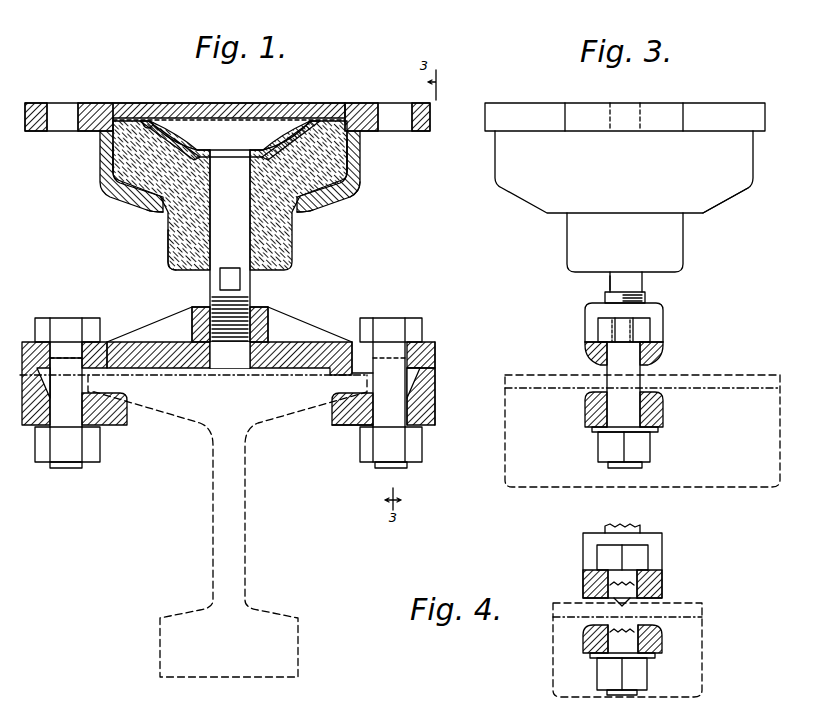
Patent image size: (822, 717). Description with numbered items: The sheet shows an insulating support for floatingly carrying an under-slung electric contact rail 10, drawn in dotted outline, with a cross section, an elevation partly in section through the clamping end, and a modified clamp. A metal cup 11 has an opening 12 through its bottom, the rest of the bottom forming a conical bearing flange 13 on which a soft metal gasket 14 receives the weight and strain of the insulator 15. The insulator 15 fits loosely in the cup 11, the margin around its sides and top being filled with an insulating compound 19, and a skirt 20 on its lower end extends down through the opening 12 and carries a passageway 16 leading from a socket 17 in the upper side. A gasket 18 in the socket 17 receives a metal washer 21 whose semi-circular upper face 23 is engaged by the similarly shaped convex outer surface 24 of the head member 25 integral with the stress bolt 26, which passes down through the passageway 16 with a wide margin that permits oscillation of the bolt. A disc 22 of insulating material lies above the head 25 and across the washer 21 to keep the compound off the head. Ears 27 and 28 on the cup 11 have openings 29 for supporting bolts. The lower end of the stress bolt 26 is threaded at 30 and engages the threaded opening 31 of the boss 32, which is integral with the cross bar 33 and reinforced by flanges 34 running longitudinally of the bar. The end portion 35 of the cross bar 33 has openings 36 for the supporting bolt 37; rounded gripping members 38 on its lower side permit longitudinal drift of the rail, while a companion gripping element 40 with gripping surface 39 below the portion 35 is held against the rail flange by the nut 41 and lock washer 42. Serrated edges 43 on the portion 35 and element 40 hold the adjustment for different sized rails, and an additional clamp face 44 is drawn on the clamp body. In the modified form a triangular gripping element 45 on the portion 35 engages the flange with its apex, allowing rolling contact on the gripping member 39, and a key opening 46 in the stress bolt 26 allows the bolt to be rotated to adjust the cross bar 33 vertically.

In FIG. 1, the contact rail 10 is at (165, 636).
In FIG. 3, the contact rail 10 is at (516, 447).
In FIG. 1, the metal cup 11 is at (108, 156).
In FIG. 3, the metal cup 11 is at (506, 164).
In FIG. 1, the opening 12 is at (160, 214).
In FIG. 1, the conical bearing flange 13 is at (330, 200).
In FIG. 1, the gasket 14 is at (350, 192).
In FIG. 1, the insulator 15 is at (345, 160).
In FIG. 1, the opening 16 is at (190, 240).
In FIG. 1, the socket 17 is at (120, 163).
In FIG. 1, the gasket 18 is at (149, 122).
In FIG. 1, the insulating compound 19 is at (125, 114).
In FIG. 1, the skirt 20 is at (175, 231).
In FIG. 3, the skirt 20 is at (577, 243).
In FIG. 1, the metal washer 21 is at (177, 118).
In FIG. 1, the disc 22 is at (183, 110).
In FIG. 1, the semi-circular upper face 23 is at (205, 120).
In FIG. 1, the convex outer surface 24 is at (278, 124).
In FIG. 1, the head member 25 is at (240, 130).
In FIG. 1, the stress bolt 26 is at (208, 273).
In FIG. 3, the stress bolt 26 is at (634, 284).
In FIG. 1, the ear 27 is at (357, 114).
In FIG. 1, the ear 28 is at (89, 110).
In FIG. 3, the ear 28 is at (670, 108).
In FIG. 1, the opening 29 is at (55, 112).
In FIG. 3, the opening 29 is at (643, 106).
In FIG. 1, the threaded portion 30 is at (258, 313).
In FIG. 1, the threaded opening 31 is at (264, 322).
In FIG. 1, the boss 32 is at (262, 328).
In FIG. 1, the cross bar 33 is at (298, 352).
In FIG. 1, the flanges 34 is at (315, 320).
In FIG. 1, the end portion 35 is at (430, 340).
In FIG. 3, the end portion 35 is at (586, 344).
In FIG. 4, the end portion 35 is at (583, 581).
In FIG. 1, the opening 36 is at (36, 340).
In FIG. 3, the opening 36 is at (585, 355).
In FIG. 1, the supporting bolt 37 is at (66, 336).
In FIG. 3, the supporting bolt 37 is at (640, 352).
In FIG. 4, the supporting bolt 37 is at (662, 580).
In FIG. 1, the gripping members 38 is at (340, 378).
In FIG. 3, the gripping members 38 is at (650, 366).
In FIG. 1, the gripping surface 39 is at (330, 398).
In FIG. 3, the gripping surface 39 is at (652, 393).
In FIG. 4, the gripping surface 39 is at (606, 626).
In FIG. 1, the companion gripping element 40 is at (350, 426).
In FIG. 1, the nut 41 is at (365, 457).
In FIG. 3, the nut 41 is at (648, 453).
In FIG. 4, the nut 41 is at (597, 673).
In FIG. 1, the lock washer 42 is at (370, 445).
In FIG. 3, the lock washer 42 is at (593, 430).
In FIG. 4, the lock washer 42 is at (650, 656).
In FIG. 1, the serrated edges 43 is at (436, 360).
In FIG. 3, the serrated edges 43 is at (736, 200).
In FIG. 1, the clamp wall 44 is at (430, 376).
In FIG. 4, the gripping element 45 is at (620, 604).
In FIG. 1, the key 46 is at (220, 281).
In FIG. 3, the key 46 is at (606, 283).